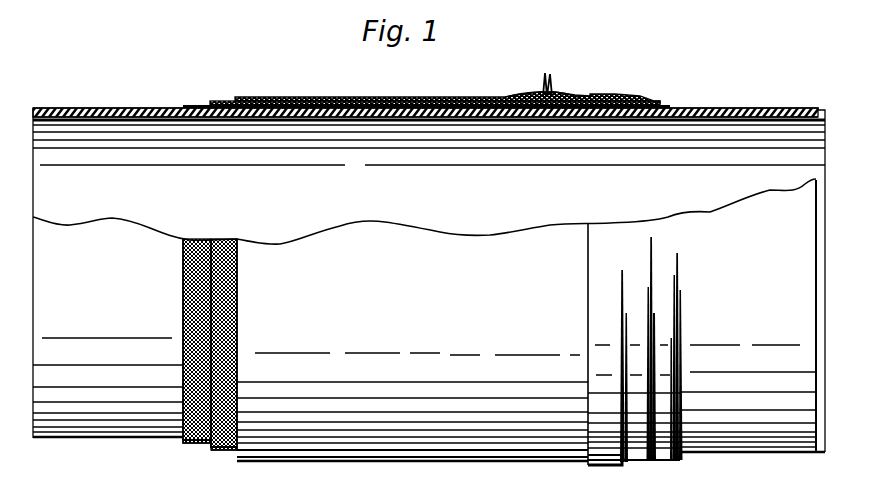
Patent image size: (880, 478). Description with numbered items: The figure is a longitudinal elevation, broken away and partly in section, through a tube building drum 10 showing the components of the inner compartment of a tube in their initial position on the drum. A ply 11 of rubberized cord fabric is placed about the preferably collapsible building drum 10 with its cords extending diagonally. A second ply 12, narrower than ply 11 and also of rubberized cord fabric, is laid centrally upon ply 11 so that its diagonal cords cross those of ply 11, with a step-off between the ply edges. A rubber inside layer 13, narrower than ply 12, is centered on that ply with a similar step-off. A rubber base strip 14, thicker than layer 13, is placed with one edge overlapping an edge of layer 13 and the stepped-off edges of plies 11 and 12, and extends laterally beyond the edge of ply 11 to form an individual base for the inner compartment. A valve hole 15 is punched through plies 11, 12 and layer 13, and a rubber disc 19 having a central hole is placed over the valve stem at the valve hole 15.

The building drum 10 is at (89, 104).
The ply 11 is at (189, 104).
The second ply 12 is at (220, 100).
The rubber inside layer 13 is at (266, 78).
The rubber base strip 14 is at (700, 108).
The valve hole 15 is at (550, 95).
The rubber disc 19 is at (526, 95).